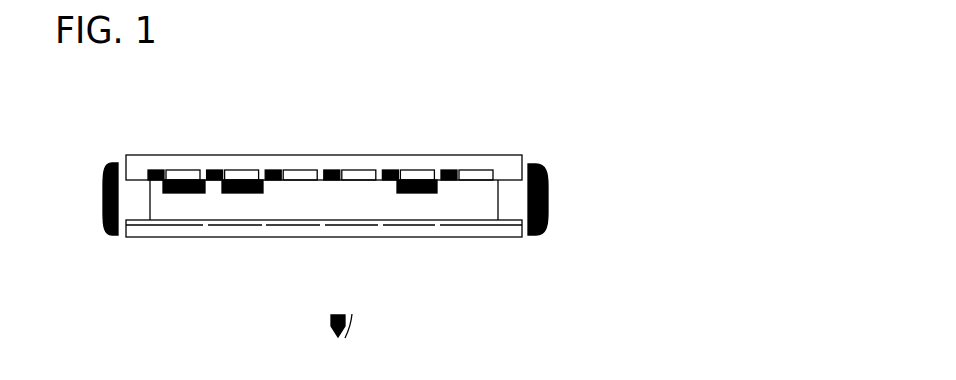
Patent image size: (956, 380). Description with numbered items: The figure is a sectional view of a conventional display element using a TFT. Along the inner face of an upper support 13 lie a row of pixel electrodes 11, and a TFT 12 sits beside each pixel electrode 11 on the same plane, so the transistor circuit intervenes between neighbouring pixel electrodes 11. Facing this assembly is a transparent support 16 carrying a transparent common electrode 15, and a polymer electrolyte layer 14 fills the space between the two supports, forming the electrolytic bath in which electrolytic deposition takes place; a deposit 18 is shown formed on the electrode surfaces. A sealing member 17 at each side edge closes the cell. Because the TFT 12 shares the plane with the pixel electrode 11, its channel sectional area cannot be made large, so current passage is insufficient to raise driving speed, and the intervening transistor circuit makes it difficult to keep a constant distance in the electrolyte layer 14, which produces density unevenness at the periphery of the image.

The pixel electrode 11 is at (297, 170).
The TFT 12 is at (214, 170).
The support 13 is at (507, 165).
The polymer electrolyte layer 14 is at (453, 205).
The transparent common electrode 15 is at (148, 228).
The transparent support 16 is at (497, 228).
The sealing member 17 is at (103, 203).
The deposit 18 is at (403, 193).